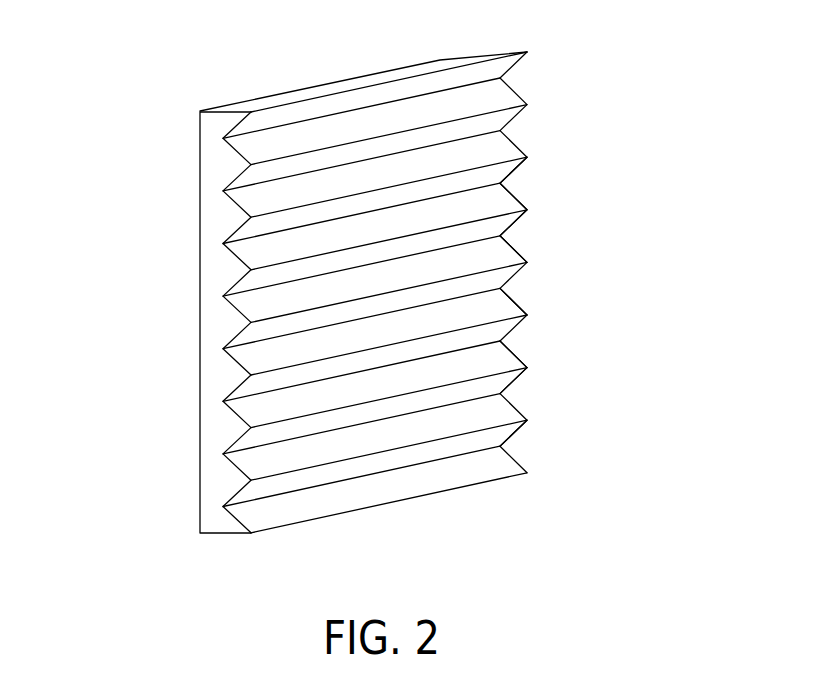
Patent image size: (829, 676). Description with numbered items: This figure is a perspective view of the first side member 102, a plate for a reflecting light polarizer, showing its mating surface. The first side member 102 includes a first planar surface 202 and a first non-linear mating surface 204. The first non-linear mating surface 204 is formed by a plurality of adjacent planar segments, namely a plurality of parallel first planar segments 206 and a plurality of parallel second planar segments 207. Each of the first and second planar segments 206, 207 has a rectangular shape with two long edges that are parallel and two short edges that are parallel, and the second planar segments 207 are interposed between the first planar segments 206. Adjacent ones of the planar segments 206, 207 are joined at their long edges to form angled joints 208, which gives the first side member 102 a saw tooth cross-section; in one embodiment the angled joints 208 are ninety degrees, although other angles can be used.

The first side member 102 is at (220, 178).
The first planar surface 202 is at (200, 268).
The first non-linear mating surface 204 is at (583, 109).
The first planar segments 206 is at (492, 380).
The second planar segments 207 is at (498, 359).
The angled joints 208 is at (527, 262).